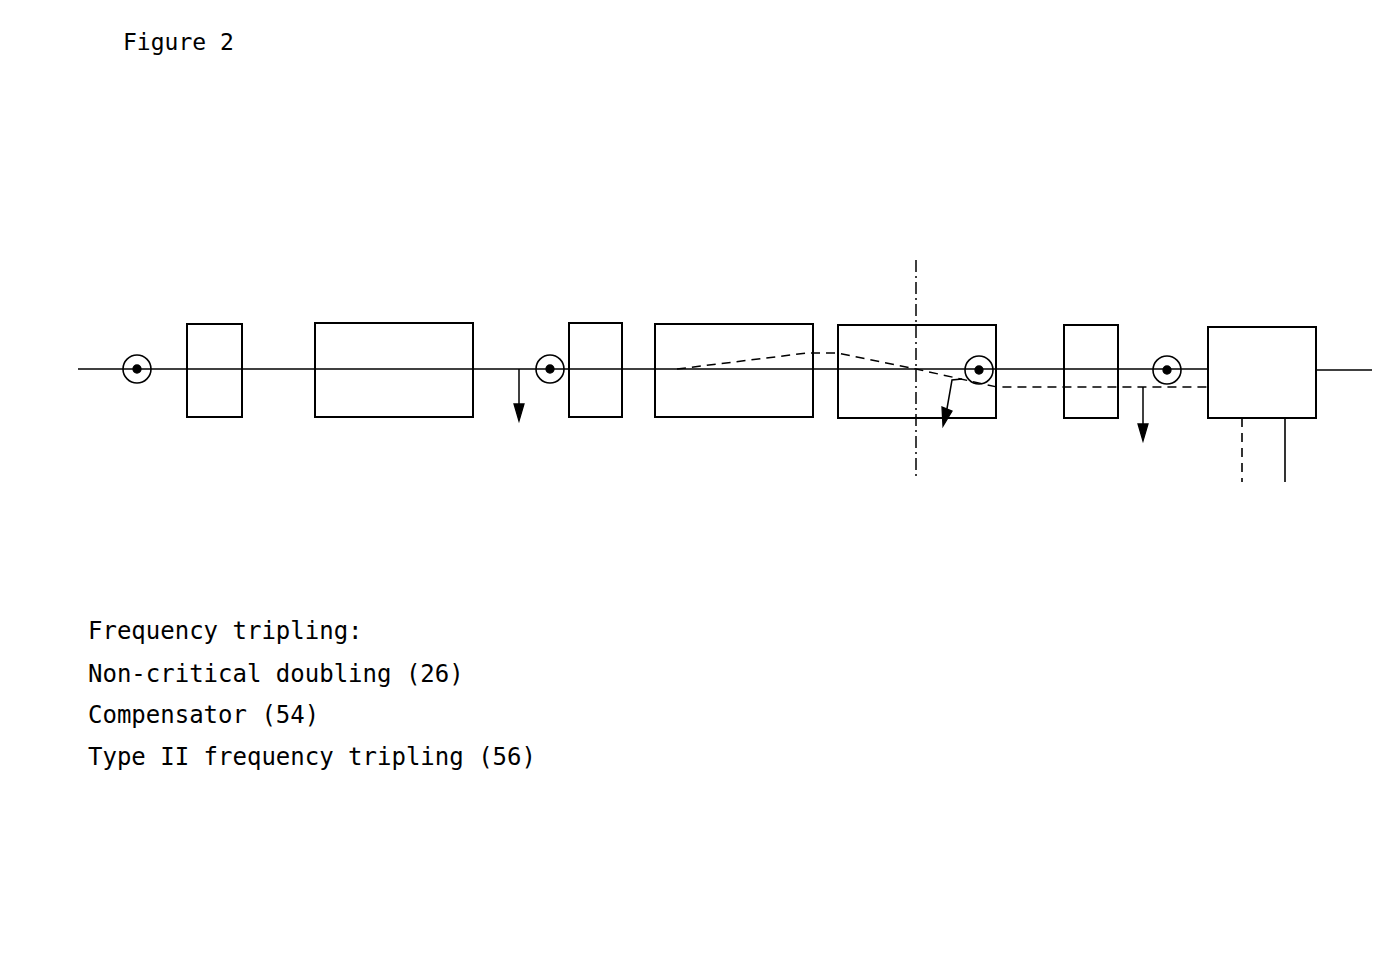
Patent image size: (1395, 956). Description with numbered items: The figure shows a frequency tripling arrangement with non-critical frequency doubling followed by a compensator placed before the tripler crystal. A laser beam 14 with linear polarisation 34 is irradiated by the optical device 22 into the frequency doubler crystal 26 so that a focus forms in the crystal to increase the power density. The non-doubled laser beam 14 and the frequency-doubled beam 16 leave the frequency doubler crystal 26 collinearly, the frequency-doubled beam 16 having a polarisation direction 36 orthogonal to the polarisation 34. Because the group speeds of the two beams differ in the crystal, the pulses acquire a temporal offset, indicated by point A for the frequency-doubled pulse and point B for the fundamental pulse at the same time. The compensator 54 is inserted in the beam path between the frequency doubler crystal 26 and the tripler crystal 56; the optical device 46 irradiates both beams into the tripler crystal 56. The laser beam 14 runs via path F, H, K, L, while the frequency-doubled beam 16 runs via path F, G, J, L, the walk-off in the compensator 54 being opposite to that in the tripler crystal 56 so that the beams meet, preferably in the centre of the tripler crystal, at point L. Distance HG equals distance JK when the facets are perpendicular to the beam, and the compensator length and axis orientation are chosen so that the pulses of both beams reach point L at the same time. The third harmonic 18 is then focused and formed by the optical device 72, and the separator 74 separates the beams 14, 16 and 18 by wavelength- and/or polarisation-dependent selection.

The laser beam 14 is at (100, 363).
The frequency-doubled beam 16 is at (1038, 392).
The third harmonic 18 is at (1344, 352).
The optical device 22 is at (214, 354).
The frequency doubler crystal 26 is at (394, 354).
The linear polarisation 34 is at (150, 358).
The polarisation direction 36 is at (510, 417).
The optical device 46 is at (595, 354).
The compensator 54 is at (734, 354).
The tripler crystal 56 is at (917, 358).
The optical device 72 is at (1122, 366).
The separator 74 is at (1262, 355).
The point A is at (518, 368).
The point B is at (550, 356).
The point F is at (655, 368).
The point G is at (803, 458).
The point H is at (792, 471).
The point J is at (846, 460).
The point K is at (847, 474).
The point L is at (916, 372).